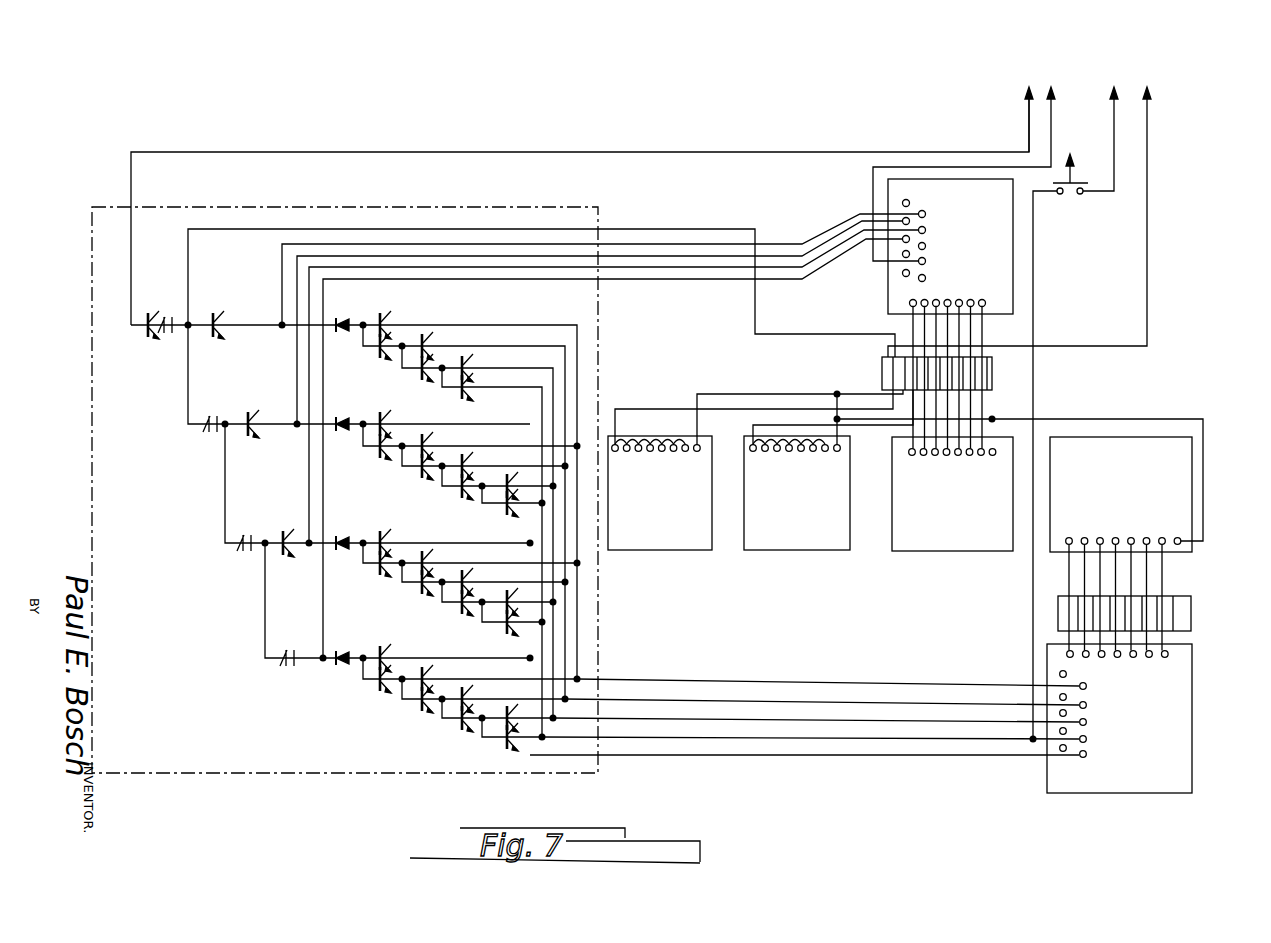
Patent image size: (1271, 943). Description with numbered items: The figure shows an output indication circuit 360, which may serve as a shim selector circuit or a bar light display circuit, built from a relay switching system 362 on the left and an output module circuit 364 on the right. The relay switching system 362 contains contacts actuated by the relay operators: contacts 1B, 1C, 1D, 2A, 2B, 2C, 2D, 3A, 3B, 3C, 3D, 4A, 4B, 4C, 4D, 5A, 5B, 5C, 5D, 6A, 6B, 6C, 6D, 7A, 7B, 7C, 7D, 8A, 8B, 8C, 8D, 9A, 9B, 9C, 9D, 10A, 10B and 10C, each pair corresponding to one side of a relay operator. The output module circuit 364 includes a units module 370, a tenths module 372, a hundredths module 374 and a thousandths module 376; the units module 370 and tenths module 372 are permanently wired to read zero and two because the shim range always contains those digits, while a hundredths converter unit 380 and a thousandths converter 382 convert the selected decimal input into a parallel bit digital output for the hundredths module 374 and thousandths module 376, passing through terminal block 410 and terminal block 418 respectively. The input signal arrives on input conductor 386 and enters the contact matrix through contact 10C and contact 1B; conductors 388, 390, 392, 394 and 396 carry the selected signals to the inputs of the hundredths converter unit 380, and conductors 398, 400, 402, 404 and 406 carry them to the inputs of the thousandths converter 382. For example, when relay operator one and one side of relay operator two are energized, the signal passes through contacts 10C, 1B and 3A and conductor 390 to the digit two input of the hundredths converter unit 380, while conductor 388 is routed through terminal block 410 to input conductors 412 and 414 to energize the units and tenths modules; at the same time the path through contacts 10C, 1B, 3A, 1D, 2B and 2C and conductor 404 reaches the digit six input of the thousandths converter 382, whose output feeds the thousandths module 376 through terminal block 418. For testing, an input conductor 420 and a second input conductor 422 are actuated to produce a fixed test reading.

The relay switching system 362 is at (497, 200).
The input conductor 386 is at (812, 148).
The conductor 388 is at (640, 229).
The conductor 390 is at (680, 244).
The conductor 392 is at (718, 256).
The conductor 394 is at (640, 268).
The conductor 396 is at (716, 282).
The conductor 398 is at (690, 688).
The conductor 400 is at (762, 702).
The conductor 402 is at (830, 718).
The conductor 404 is at (910, 720).
The conductor 406 is at (880, 757).
The hundredths converter unit 380 is at (1019, 258).
The thousandths converter 382 is at (1192, 662).
The terminal block 410 is at (995, 388).
The terminal block 418 is at (1215, 584).
The input conductor 412 is at (763, 402).
The input conductor 414 is at (883, 440).
The input conductor 420 is at (1050, 118).
The second input conductor 422 is at (1115, 120).
The units module 370 is at (618, 552).
The tenths module 372 is at (786, 552).
The hundredths module 374 is at (946, 552).
The thousandths module 376 is at (1146, 438).
The output indication circuit 360 is at (742, 606).
The output module circuit 364 is at (865, 588).
The relay contact 10C is at (152, 313).
The relay contact 1B is at (168, 341).
The relay contact 3A is at (214, 312).
The relay contact 3B is at (211, 414).
The relay contact 5C is at (249, 414).
The relay contact 1C is at (380, 313).
The relay contact 1D is at (378, 360).
The relay contact 2A is at (422, 333).
The relay contact 2B is at (420, 378).
The relay contact 2C is at (463, 356).
The relay contact 2D is at (463, 394).
The relay contact 3C is at (383, 410).
The relay contact 3D is at (378, 458).
The relay contact 4A is at (430, 444).
The relay contact 4B is at (416, 477).
The relay contact 4C is at (466, 464).
The relay contact 4D is at (456, 492).
The relay contact 5A is at (516, 470).
The relay contact 5B is at (504, 505).
The relay contact 5D is at (248, 534).
The relay contact 8A is at (285, 536).
The relay contact 6A is at (384, 534).
The relay contact 6B is at (380, 572).
The relay contact 6C is at (424, 556).
The relay contact 6D is at (418, 588).
The relay contact 7A is at (458, 560).
The relay contact 7B is at (456, 613).
The relay contact 7C is at (509, 596).
The relay contact 7D is at (508, 632).
The relay contact 8B is at (290, 650).
The relay contact 8C is at (382, 650).
The relay contact 8D is at (370, 684).
The relay contact 9A is at (428, 672).
The relay contact 9B is at (418, 706).
The relay contact 9C is at (448, 688).
The relay contact 9D is at (458, 728).
The relay contact 10A is at (511, 711).
The relay contact 10B is at (503, 744).